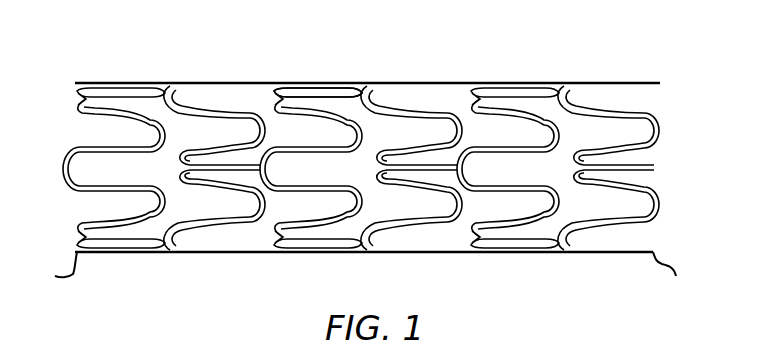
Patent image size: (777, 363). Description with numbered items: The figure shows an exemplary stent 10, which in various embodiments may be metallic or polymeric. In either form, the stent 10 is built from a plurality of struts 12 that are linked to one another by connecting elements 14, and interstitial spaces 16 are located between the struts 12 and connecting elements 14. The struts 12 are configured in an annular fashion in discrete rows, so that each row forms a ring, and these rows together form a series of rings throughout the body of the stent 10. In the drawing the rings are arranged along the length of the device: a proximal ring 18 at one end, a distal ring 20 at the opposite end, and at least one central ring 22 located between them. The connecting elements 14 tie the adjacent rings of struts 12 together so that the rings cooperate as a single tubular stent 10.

The stent 10 is at (358, 157).
The struts 12 is at (417, 113).
The connecting elements 14 is at (330, 93).
The interstitial spaces 16 is at (212, 100).
The proximal ring 18 is at (55, 269).
The distal ring 20 is at (668, 275).
The central ring 22 is at (378, 252).